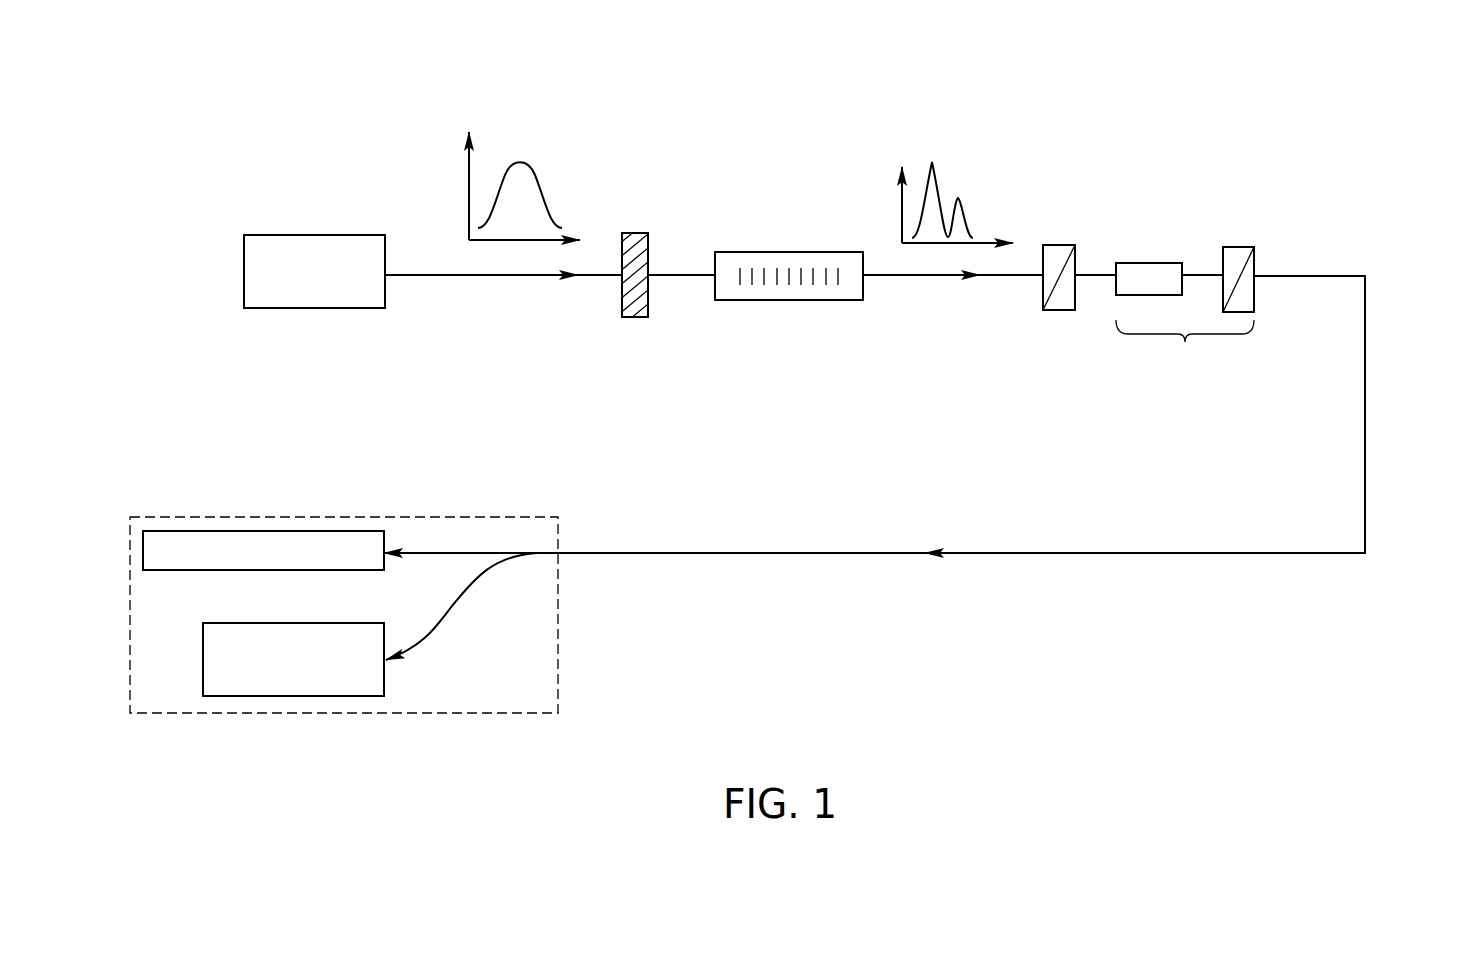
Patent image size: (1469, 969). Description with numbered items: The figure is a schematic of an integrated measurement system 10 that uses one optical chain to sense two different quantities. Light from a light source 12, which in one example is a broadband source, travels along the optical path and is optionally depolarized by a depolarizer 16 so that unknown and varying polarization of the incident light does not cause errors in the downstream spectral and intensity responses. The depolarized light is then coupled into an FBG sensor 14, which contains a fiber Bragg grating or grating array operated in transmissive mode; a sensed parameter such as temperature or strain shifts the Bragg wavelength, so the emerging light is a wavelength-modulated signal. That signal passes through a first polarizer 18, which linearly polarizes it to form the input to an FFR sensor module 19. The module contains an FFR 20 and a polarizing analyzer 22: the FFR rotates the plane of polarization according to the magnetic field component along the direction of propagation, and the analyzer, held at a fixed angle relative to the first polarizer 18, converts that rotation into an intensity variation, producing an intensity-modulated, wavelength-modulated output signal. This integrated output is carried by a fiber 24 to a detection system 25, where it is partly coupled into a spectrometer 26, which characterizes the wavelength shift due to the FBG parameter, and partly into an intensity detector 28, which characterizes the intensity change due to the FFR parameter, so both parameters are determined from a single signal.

The measurement system 10 is at (1352, 96).
The light source 12 is at (315, 235).
The FBG sensor 14 is at (761, 252).
The depolarizer 16 is at (633, 233).
The first polarizer 18 is at (1060, 245).
The FFR sensor module 19 is at (1185, 347).
The FFR 20 is at (1148, 263).
The polarizing analyzer 22 is at (1238, 247).
The fiber 24 is at (873, 553).
The detection system 25 is at (390, 517).
The spectrometer 26 is at (263, 531).
The intensity detector 28 is at (292, 696).